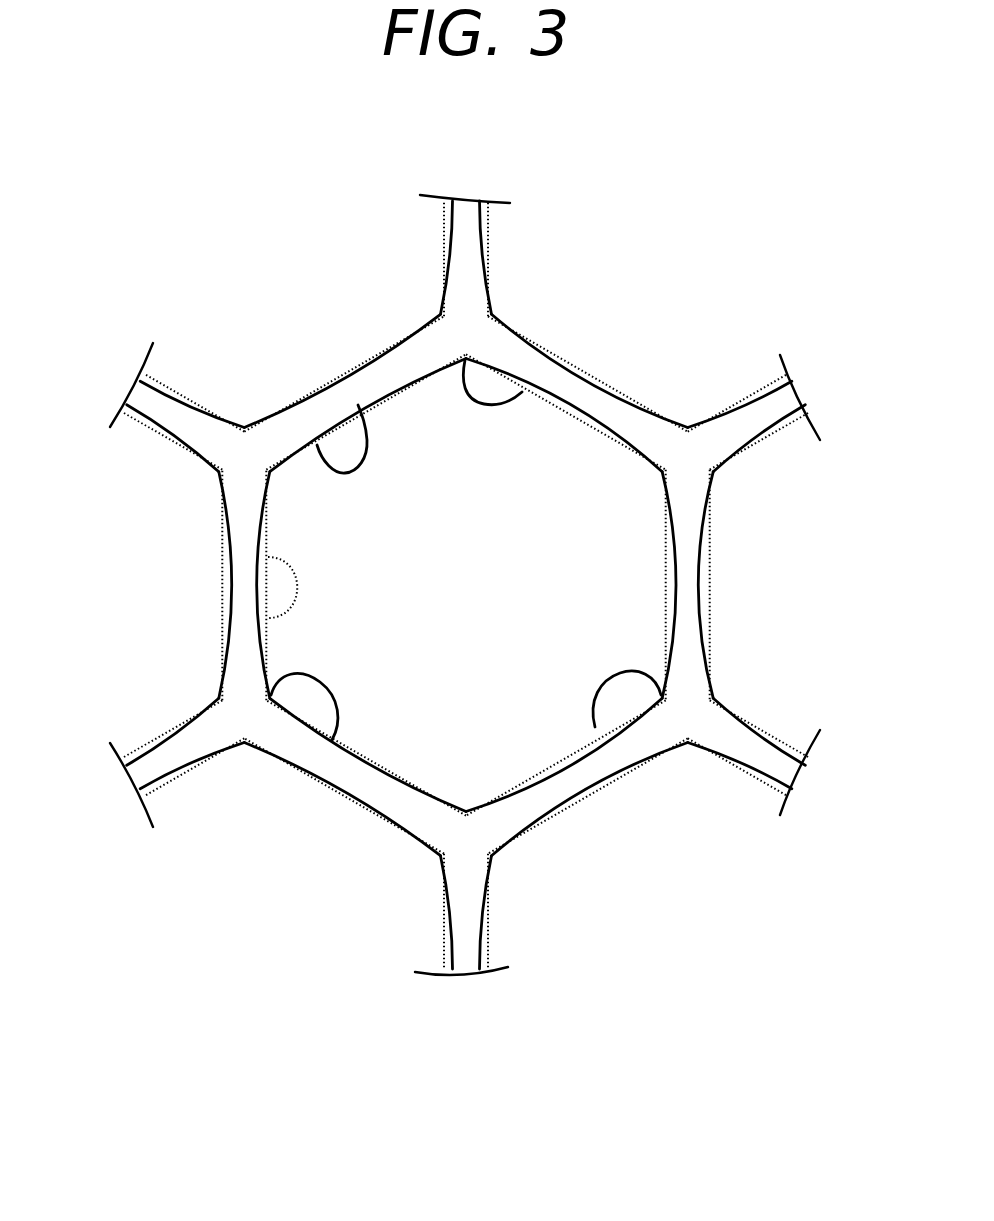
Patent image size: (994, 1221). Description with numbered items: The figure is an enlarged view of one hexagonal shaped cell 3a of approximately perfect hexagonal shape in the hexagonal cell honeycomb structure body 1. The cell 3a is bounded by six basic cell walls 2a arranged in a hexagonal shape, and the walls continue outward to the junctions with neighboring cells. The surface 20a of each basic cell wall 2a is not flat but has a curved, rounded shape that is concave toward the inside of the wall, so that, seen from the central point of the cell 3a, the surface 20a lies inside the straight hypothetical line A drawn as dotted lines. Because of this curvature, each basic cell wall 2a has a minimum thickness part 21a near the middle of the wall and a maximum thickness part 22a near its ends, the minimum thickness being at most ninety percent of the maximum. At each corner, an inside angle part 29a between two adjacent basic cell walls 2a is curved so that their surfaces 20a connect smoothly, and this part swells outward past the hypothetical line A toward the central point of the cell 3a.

The hexagonal cell honeycomb structure body 1 is at (593, 943).
The basic cell wall 2a is at (402, 360).
The hexagonal shaped cell 3a is at (557, 515).
The surface of the basic cell wall 20a is at (317, 445).
The minimum thickness part 21a is at (683, 588).
The maximum thickness part 22a is at (683, 477).
The inside angle part 29a is at (522, 392).
The hypothetical line A is at (268, 618).